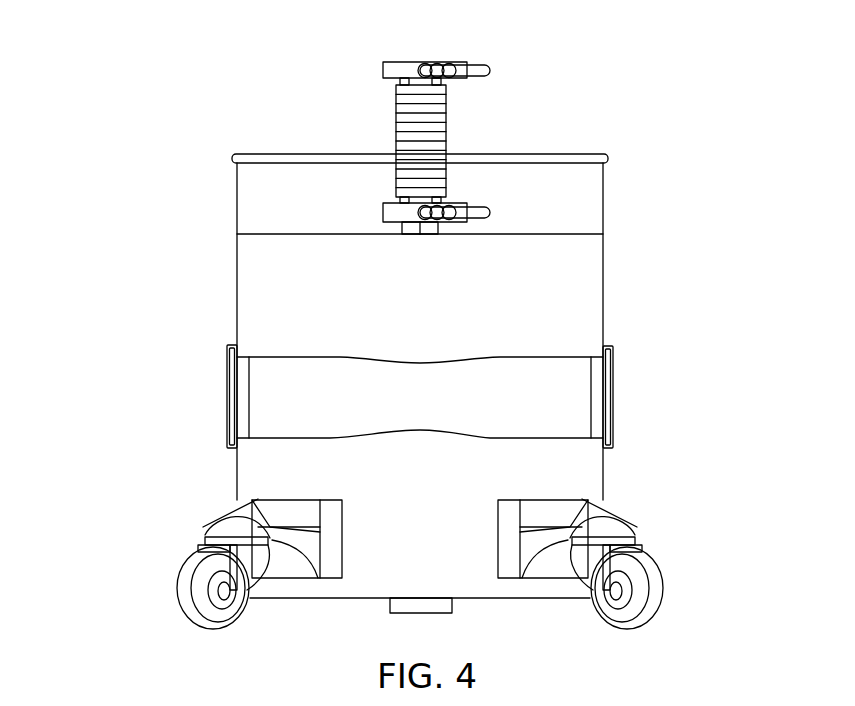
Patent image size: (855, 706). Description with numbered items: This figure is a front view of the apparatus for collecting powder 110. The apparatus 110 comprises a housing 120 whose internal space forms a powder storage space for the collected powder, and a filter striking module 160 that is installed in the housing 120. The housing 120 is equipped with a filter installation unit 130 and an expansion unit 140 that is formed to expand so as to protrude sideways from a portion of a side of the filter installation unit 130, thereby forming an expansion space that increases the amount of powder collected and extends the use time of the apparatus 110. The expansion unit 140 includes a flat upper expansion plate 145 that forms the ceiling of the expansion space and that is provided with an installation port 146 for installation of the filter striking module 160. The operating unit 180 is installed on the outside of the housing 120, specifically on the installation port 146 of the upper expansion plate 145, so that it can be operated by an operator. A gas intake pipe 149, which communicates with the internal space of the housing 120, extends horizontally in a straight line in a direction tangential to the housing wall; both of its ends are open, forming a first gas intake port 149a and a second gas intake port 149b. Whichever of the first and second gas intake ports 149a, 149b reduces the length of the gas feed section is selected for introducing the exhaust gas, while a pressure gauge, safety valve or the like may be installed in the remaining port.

The apparatus for collecting powder 110 is at (496, 53).
The housing 120 is at (604, 285).
The filter installation unit 130 is at (270, 154).
The expansion unit 140 is at (250, 234).
The upper expansion plate 145 is at (580, 234).
The installation port 146 is at (410, 234).
The gas intake pipe 149 is at (563, 373).
The first gas intake port 149a is at (227, 403).
The second gas intake port 149b is at (614, 386).
The filter striking module 160 is at (452, 160).
The operating unit 180 is at (396, 118).